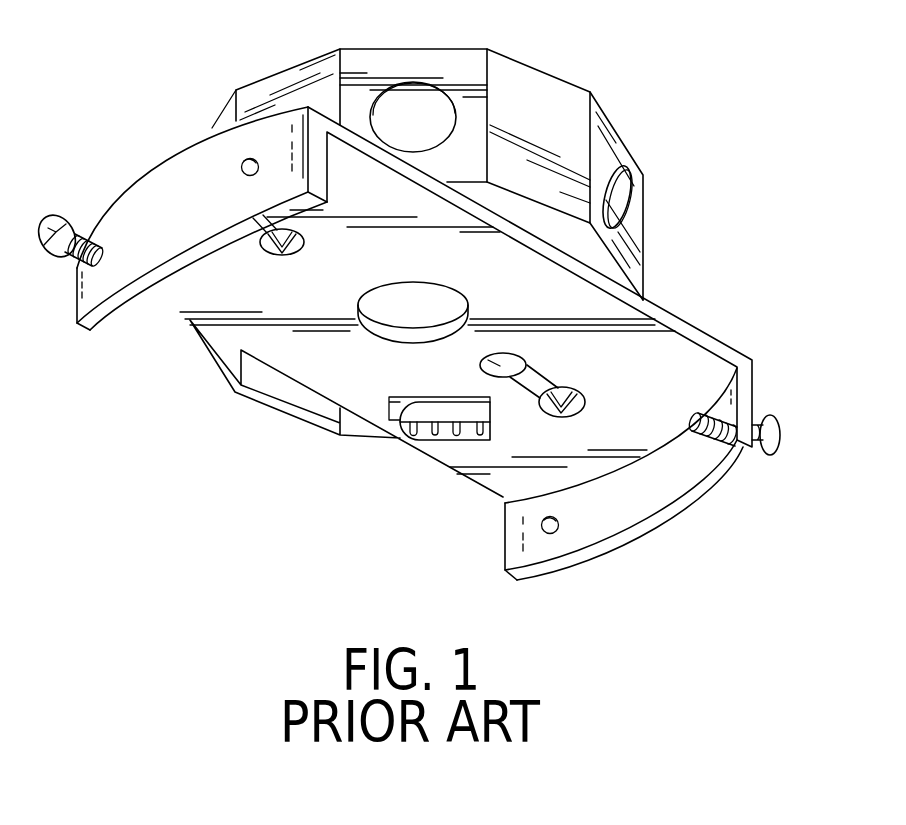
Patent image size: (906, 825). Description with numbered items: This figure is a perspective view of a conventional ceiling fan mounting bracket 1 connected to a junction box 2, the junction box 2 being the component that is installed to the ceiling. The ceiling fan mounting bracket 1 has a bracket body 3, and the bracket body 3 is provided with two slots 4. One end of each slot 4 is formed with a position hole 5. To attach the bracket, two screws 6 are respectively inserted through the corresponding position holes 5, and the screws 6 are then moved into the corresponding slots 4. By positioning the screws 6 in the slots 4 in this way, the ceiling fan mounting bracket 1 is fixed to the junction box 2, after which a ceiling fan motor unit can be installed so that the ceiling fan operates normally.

The ceiling fan mounting bracket 1 is at (700, 325).
The junction box 2 is at (620, 132).
The bracket body 3 is at (150, 163).
The slot 4 is at (535, 380).
The position hole 5 is at (497, 362).
The screw 6 is at (263, 252).